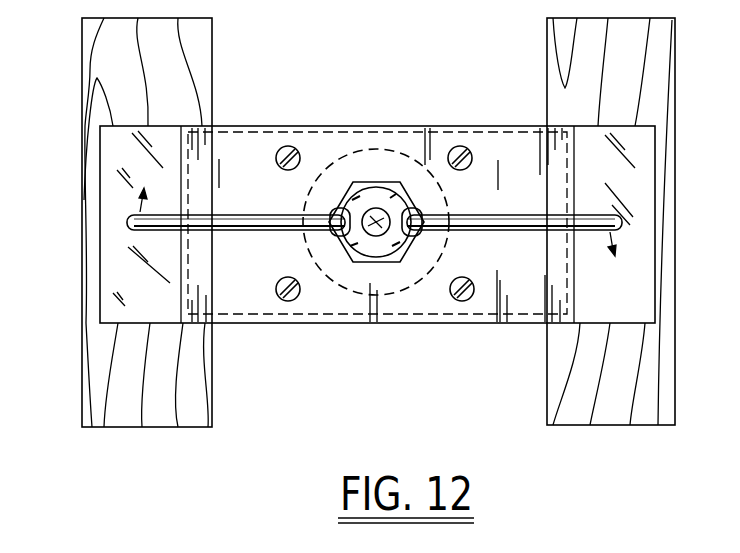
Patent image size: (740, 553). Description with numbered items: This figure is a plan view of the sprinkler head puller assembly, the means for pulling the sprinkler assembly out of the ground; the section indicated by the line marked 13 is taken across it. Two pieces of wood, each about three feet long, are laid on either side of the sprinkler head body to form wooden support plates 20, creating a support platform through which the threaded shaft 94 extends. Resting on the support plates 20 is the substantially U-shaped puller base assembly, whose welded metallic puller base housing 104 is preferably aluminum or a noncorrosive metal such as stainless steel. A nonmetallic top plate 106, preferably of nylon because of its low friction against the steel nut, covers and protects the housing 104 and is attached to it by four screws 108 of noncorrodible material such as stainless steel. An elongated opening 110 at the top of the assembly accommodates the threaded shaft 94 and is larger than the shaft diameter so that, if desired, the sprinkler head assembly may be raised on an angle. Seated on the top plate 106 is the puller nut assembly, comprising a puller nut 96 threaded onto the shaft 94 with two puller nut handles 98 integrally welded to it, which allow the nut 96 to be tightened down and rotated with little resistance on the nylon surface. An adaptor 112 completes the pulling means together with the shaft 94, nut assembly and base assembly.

The section line 13- 13 is at (68, 223).
The wooden support plate 20 is at (158, 427).
The threaded shaft 94 is at (376, 212).
The puller nut 96 is at (370, 263).
The puller nut handle 98 is at (230, 213).
The puller base housing 104 is at (110, 288).
The top plate 106 is at (237, 277).
The screw 108 is at (291, 146).
The elongated opening 110 is at (414, 214).
The adaptor 112 is at (352, 158).